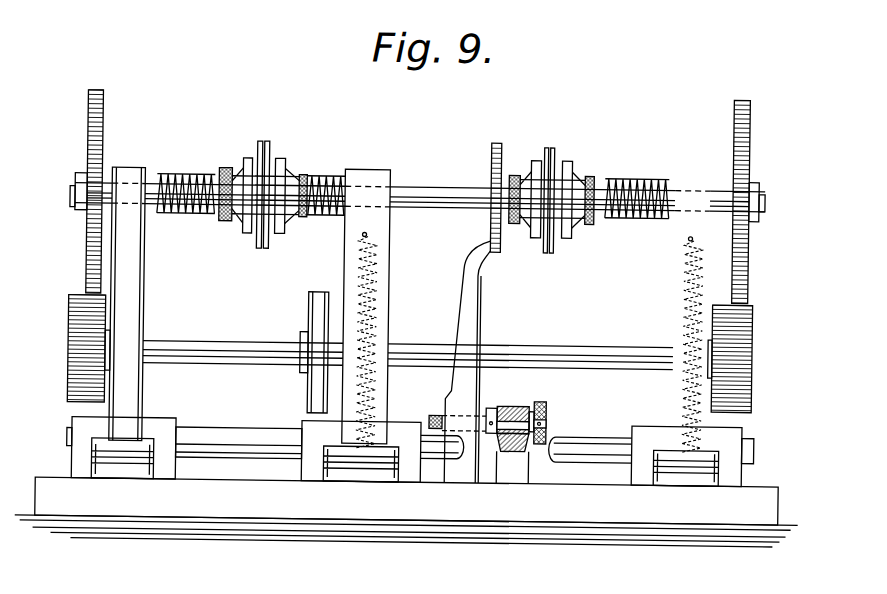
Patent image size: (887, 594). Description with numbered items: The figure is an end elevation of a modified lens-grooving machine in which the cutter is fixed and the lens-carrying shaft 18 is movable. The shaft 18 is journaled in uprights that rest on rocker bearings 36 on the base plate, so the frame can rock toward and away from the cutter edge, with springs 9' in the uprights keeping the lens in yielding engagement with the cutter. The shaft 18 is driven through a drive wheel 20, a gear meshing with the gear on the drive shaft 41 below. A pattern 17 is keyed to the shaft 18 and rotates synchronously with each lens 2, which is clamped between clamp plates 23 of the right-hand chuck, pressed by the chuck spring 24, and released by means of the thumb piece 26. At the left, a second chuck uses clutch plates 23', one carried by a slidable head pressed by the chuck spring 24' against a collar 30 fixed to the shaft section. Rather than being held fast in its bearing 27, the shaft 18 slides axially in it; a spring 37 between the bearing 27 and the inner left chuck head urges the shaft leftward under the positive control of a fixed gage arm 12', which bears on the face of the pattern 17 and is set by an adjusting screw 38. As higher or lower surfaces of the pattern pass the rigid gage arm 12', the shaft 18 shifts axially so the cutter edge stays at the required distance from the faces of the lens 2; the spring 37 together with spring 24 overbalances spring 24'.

The collar 30 is at (118, 171).
The bearing 27 is at (365, 182).
The lens-carrying shaft 18 is at (413, 190).
The chuck spring 24' is at (186, 175).
The spring 37 is at (318, 178).
The chuck spring 24 is at (636, 221).
The lens 2 is at (262, 150).
The clutch plate 23' is at (301, 185).
The clamp plate 23 is at (554, 172).
The thumb piece 26 is at (590, 174).
The pattern 17 is at (498, 148).
The drive wheel 20 is at (748, 146).
The fixed gage arm 12' is at (485, 362).
The drive shaft 41 is at (615, 355).
The springs 9' is at (479, 341).
The adjusting screw 38 is at (483, 418).
The rocker bearings 36 is at (123, 447).